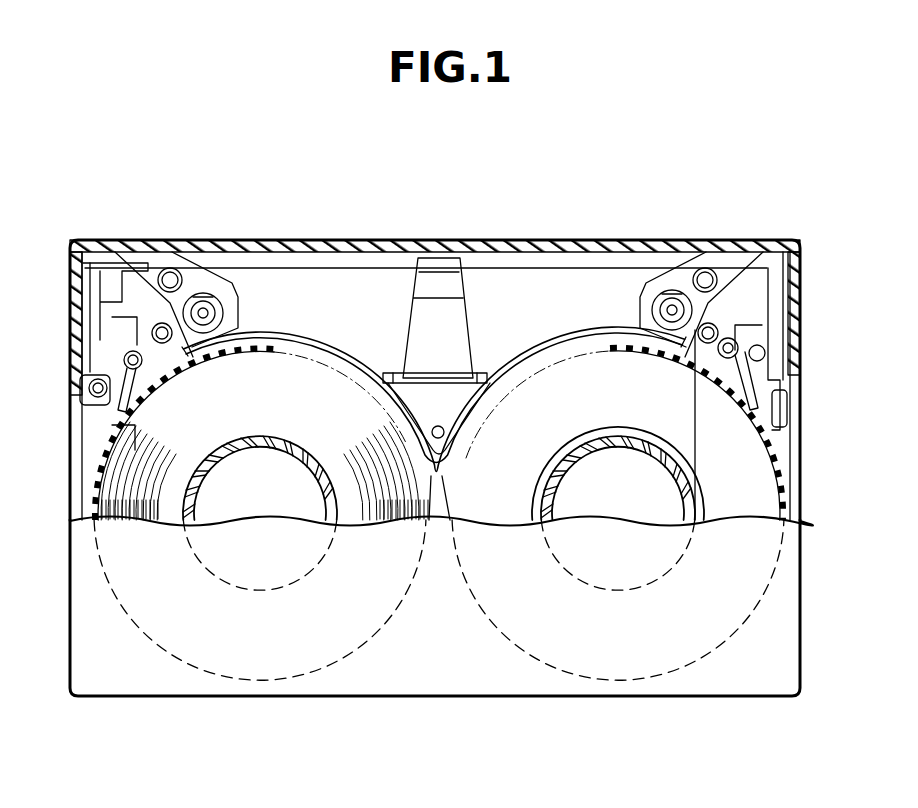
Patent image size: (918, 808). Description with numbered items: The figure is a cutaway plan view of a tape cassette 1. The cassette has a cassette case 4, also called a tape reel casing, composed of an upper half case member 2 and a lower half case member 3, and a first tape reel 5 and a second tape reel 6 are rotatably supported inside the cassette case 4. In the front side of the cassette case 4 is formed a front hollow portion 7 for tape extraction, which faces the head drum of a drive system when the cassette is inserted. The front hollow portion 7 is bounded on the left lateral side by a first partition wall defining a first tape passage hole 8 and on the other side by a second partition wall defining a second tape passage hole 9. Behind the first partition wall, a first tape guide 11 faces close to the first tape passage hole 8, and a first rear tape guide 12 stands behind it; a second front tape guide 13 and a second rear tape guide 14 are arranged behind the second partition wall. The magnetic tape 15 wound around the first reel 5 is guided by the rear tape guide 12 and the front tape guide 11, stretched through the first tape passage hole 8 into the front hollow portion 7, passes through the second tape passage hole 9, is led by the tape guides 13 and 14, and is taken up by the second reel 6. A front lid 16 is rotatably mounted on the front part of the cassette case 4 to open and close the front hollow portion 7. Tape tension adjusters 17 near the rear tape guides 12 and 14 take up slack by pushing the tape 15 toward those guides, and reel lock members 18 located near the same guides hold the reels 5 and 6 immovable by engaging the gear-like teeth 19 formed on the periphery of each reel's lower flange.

The tape cassette 1 is at (808, 622).
The upper half case member 2 is at (803, 553).
The lower half case member 3 is at (803, 488).
The cassette case 4 is at (858, 483).
The first tape reel 5 is at (198, 560).
The second tape reel 6 is at (617, 590).
The front hollow portion 7 is at (330, 319).
The first tape passage hole 8 is at (186, 300).
The second tape passage hole 9 is at (683, 296).
The first tape guide 11 is at (168, 268).
The first rear tape guide 12 is at (156, 325).
The second front tape guide 13 is at (708, 268).
The second rear tape guide 14 is at (711, 324).
The magnetic tape 15 is at (376, 242).
The front lid 16 is at (537, 242).
The tape tension adjuster 17 is at (190, 282).
The reel lock member 18 is at (125, 415).
The teeth 19 is at (113, 438).